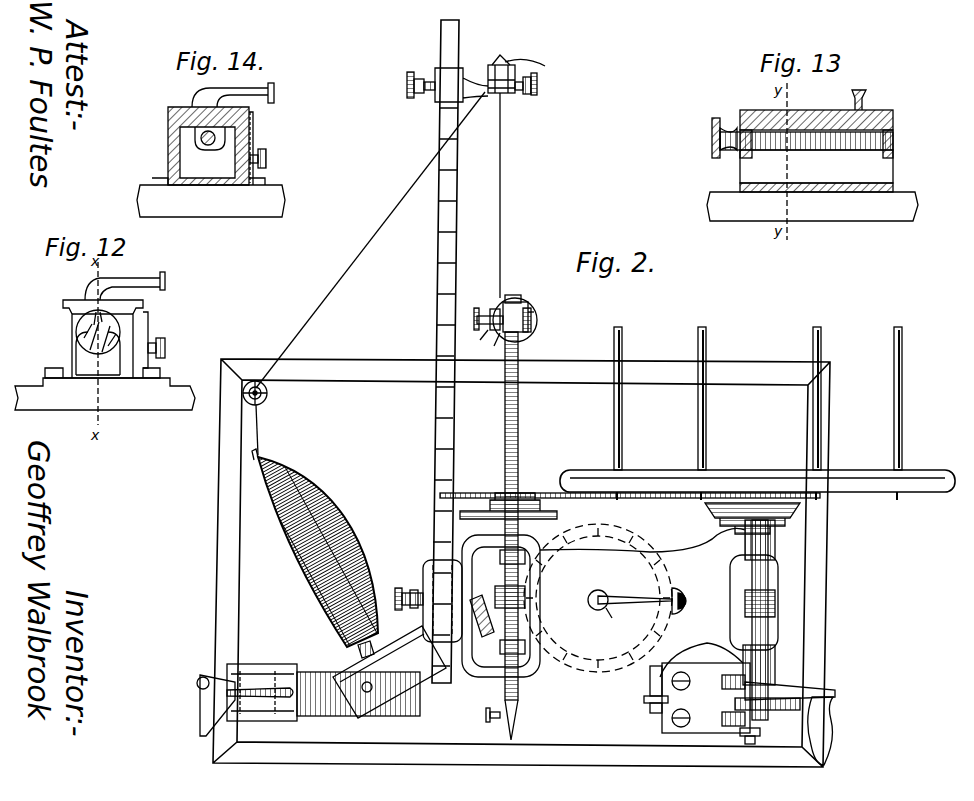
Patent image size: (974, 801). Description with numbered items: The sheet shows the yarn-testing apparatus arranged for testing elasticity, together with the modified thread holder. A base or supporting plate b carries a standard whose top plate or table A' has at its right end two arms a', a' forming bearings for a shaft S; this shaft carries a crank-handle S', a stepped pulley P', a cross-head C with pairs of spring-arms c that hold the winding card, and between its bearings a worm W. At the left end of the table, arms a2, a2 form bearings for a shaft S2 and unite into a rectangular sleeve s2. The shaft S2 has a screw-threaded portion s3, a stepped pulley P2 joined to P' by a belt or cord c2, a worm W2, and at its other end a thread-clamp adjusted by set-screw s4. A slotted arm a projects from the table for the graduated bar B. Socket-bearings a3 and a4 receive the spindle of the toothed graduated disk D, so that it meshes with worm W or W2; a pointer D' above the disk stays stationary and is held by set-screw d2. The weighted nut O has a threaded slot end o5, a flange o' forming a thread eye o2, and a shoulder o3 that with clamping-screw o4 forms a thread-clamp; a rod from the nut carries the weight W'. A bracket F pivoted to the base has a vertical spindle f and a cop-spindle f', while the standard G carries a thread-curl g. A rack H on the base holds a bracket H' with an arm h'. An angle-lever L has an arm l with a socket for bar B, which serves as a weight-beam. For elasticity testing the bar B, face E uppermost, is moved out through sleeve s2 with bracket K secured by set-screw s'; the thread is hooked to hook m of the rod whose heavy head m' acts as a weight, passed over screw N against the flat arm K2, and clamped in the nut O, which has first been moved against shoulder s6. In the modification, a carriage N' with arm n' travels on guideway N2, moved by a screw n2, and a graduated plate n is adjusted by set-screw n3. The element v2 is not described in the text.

In FIG. 2, the graduated face E is at (445, 351).
In FIG. 2, the graduated bar B is at (441, 262).
In FIG. 2, the bracket K is at (461, 85).
In FIG. 2, the set-screw s' is at (411, 85).
In FIG. 2, the arm K2 is at (508, 93).
In FIG. 2, the heavy head m' is at (503, 55).
In FIG. 2, the hook m is at (527, 63).
In FIG. 2, the double-headed screw N is at (534, 84).
In FIG. 2, the weighted nut O is at (530, 318).
In FIG. 2, the shoulder or head s6 is at (513, 295).
In FIG. 2, the weight W' is at (538, 307).
In FIG. 2, the clamping-screw o4 is at (481, 319).
In FIG. 2, the shoulder o3 is at (494, 310).
In FIG. 2, the thread eye or hook o2 is at (534, 312).
In FIG. 2, the screw-threaded upper end of slot o5 is at (477, 339).
In FIG. 2, the flange o' is at (491, 347).
In FIG. 2, the screw-threaded portion s3 is at (522, 536).
In FIG. 2, the set-screw s4 is at (483, 717).
In FIG. 2, the shaft S2 is at (483, 470).
In FIG. 2, the stepped cord or belt pulley P2 is at (520, 507).
In FIG. 2, the belt or cord c2 is at (630, 507).
In FIG. 2, the stepped cord or belt pulley P' is at (742, 518).
In FIG. 2, the cross-head C is at (757, 469).
In FIG. 2, the spring-arms c is at (812, 350).
In FIG. 2, the shaft S is at (772, 620).
In FIG. 2, the arms a' is at (761, 602).
In FIG. 2, the worm W is at (774, 603).
In FIG. 2, the top plate or table A' is at (642, 602).
In FIG. 2, the socket-bearing a3 is at (687, 601).
In FIG. 2, the angle-lever L is at (735, 702).
In FIG. 2, the arm l is at (722, 682).
In FIG. 2, the screw v2 is at (748, 744).
In FIG. 2, the slotted arm a is at (648, 689).
In FIG. 2, the crank-handle S' is at (801, 723).
In FIG. 2, the graduated disk D is at (598, 598).
In FIG. 2, the set-screw d2 is at (588, 600).
In FIG. 2, the pointer D' is at (635, 591).
In FIG. 2, the socket-bearing a4 is at (604, 619).
In FIG. 2, the arms a2 is at (501, 608).
In FIG. 2, the worm W2 is at (495, 595).
In FIG. 2, the sleeve s2 is at (423, 570).
In FIG. 2, the bracket F is at (389, 672).
In FIG. 2, the vertical spindle f is at (374, 681).
In FIG. 2, the cop-spindle f' is at (378, 640).
In FIG. 2, the rack or toothed plate H is at (358, 703).
In FIG. 2, the bracket H' is at (262, 682).
In FIG. 2, the arm h' is at (209, 705).
In FIG. 2, the standard G is at (262, 402).
In FIG. 2, the thread-curl g is at (267, 393).
In FIG. 2, the spindle weight is at (316, 555).
In FIG. 2, the base or supporting plate b is at (529, 563).
In FIG. 14, the slide or carriage N' is at (211, 151).
In FIG. 12, the slide or carriage N' is at (98, 332).
In FIG. 13, the slide or carriage N' is at (812, 162).
In FIG. 14, the guideway N2 is at (208, 146).
In FIG. 12, the guideway N2 is at (105, 373).
In FIG. 13, the guideway N2 is at (816, 171).
In FIG. 14, the laterally-projecting arm n' is at (241, 94).
In FIG. 12, the laterally-projecting arm n' is at (134, 284).
In FIG. 13, the laterally-projecting arm n' is at (866, 98).
In FIG. 14, the graduated plate n is at (258, 147).
In FIG. 12, the graduated plate n is at (151, 340).
In FIG. 14, the screw n2 is at (200, 144).
In FIG. 12, the screw n2 is at (90, 340).
In FIG. 13, the screw n2 is at (786, 138).
In FIG. 14, the set-screw n3 is at (266, 158).
In FIG. 12, the set-screw n3 is at (165, 348).